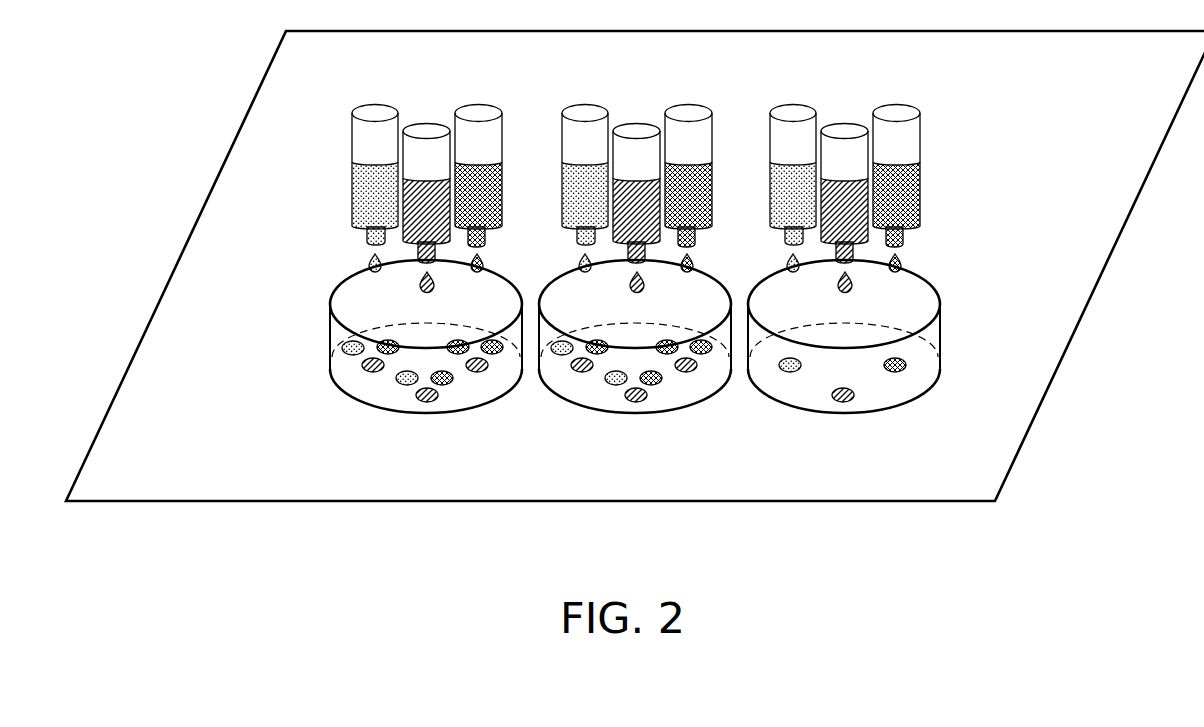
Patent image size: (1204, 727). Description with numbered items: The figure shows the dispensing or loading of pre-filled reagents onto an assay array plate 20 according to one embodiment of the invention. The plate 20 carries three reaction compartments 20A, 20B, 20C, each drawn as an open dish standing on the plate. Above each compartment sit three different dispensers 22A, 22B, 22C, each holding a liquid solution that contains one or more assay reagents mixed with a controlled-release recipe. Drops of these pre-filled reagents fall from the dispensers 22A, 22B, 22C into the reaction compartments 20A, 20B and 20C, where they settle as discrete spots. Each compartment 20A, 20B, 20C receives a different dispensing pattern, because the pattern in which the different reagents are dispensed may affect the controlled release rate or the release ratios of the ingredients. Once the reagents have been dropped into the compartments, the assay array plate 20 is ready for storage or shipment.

The assay array plate 20 is at (220, 258).
The reaction compartment 20A is at (425, 415).
The reaction compartment 20B is at (635, 415).
The reaction compartment 20C is at (842, 415).
The dispenser 22A is at (377, 110).
The dispenser 22B is at (430, 128).
The dispenser 22C is at (480, 110).